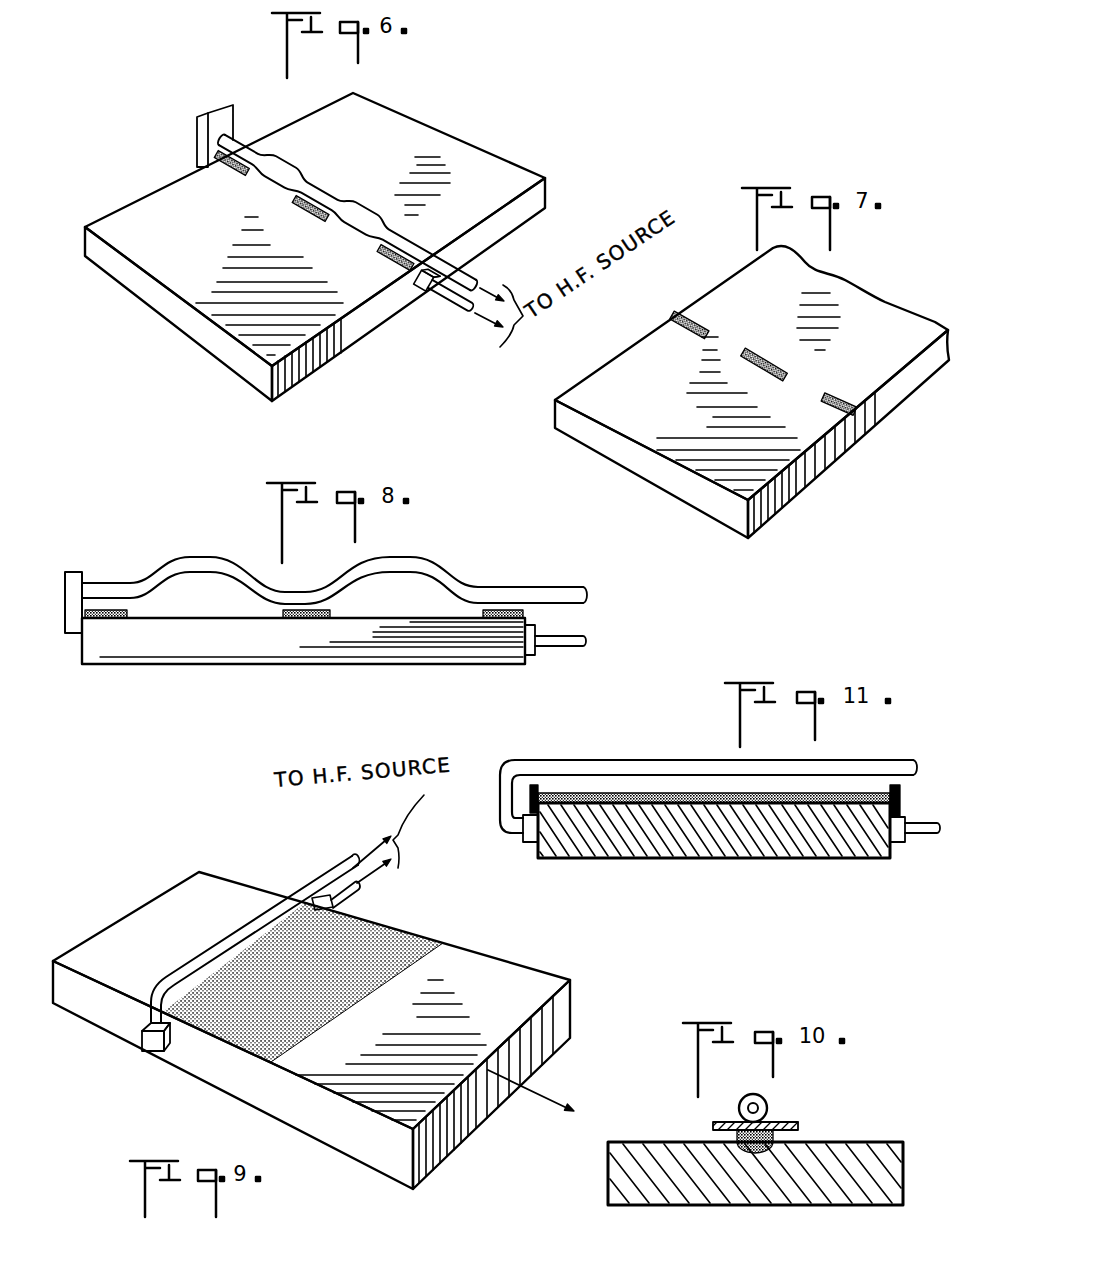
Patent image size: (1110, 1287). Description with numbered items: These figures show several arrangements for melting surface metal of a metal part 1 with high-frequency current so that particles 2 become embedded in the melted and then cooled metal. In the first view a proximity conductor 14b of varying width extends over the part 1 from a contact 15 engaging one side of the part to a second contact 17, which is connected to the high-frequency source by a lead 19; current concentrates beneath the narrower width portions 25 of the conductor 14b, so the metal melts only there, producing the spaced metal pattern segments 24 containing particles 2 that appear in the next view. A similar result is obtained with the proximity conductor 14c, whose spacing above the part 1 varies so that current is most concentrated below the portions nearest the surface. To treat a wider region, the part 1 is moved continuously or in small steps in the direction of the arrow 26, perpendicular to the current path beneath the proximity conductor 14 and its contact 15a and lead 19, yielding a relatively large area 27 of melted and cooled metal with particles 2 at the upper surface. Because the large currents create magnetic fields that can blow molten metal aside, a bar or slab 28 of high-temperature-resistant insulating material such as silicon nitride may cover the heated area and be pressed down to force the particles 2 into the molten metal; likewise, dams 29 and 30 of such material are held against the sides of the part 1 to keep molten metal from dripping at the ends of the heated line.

In FIG. 6, the metal part 1 is at (145, 200).
In FIG. 7, the metal part 1 is at (883, 303).
In FIG. 10, the metal part 1 is at (893, 1142).
In FIG. 11, the metal part 1 is at (663, 852).
In FIG. 6, the particles 2 is at (240, 170).
In FIG. 8, the particles 2 is at (115, 618).
In FIG. 9, the particles 2 is at (238, 965).
In FIG. 10, the particles 2 is at (737, 1135).
In FIG. 11, the particles 2 is at (705, 793).
In FIG. 9, the proximity conductor 14 is at (338, 863).
In FIG. 10, the proximity conductor 14 is at (768, 1105).
In FIG. 11, the proximity conductor 14 is at (650, 760).
In FIG. 6, the proximity conductor of varying width 14b is at (313, 173).
In FIG. 8, the proximity conductor of variable spacing 14c is at (477, 587).
In FIG. 6, the contact 15 is at (228, 110).
In FIG. 8, the contact 15 is at (72, 572).
In FIG. 9, the support block 15a is at (156, 1045).
In FIG. 11, the support block 15a is at (525, 842).
In FIG. 6, the contact 17 is at (420, 296).
In FIG. 8, the contact 17 is at (535, 655).
In FIG. 9, the contact 17 is at (333, 904).
In FIG. 11, the contact 17 is at (893, 845).
In FIG. 6, the lead 19 is at (452, 303).
In FIG. 8, the lead 19 is at (573, 633).
In FIG. 9, the lead 19 is at (359, 889).
In FIG. 7, the metal pattern segments 24 is at (710, 333).
In FIG. 6, the narrower width portions 25 is at (253, 145).
In FIG. 9, the arrow 26 is at (527, 1096).
In FIG. 9, the area of melted and cooled metal 27 is at (406, 941).
In FIG. 10, the bar or slab 28 is at (798, 1125).
In FIG. 11, the dam 29 is at (535, 785).
In FIG. 11, the dam 30 is at (885, 785).